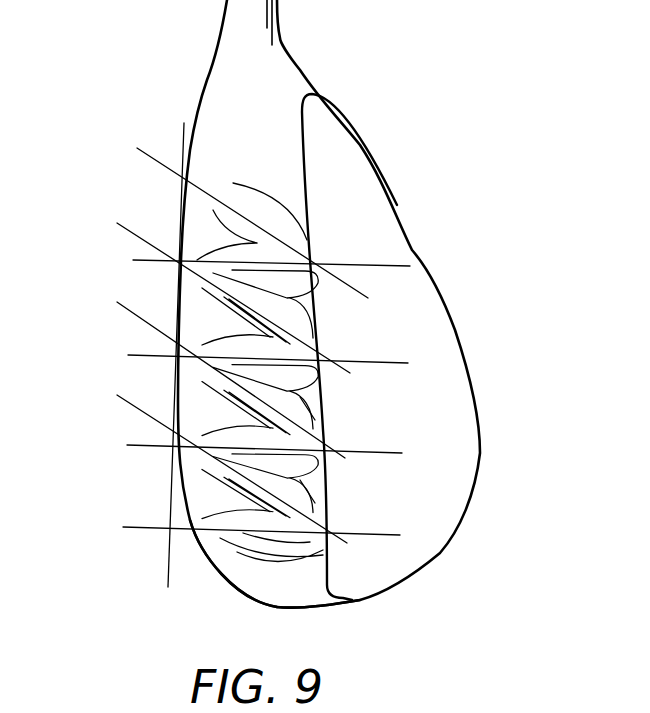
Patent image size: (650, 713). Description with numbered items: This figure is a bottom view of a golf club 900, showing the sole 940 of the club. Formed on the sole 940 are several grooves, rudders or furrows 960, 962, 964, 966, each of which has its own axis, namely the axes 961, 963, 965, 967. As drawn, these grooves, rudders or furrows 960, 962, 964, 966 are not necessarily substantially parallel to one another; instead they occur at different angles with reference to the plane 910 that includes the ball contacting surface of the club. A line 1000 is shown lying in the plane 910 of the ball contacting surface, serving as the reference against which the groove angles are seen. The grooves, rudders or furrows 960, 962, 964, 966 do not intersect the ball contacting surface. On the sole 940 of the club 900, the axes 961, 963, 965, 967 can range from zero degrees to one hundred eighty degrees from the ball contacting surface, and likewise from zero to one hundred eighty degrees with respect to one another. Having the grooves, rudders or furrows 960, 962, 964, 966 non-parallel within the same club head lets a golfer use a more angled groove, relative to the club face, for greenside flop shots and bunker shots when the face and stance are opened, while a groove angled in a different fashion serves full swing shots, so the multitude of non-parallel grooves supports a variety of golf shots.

The golf club 900 is at (163, 62).
The line 1000 is at (184, 126).
The sole 940 is at (217, 178).
The axis 967 is at (130, 310).
The groove, rudder or furrow 964 is at (250, 440).
The axis 963 is at (129, 404).
The axis 965 is at (145, 447).
The axis 961 is at (143, 528).
The groove, rudder or furrow 966 is at (310, 417).
The groove, rudder or furrow 962 is at (310, 500).
The groove, rudder or furrow 960 is at (238, 553).
The plane of the ball contacting surface 910 is at (265, 607).